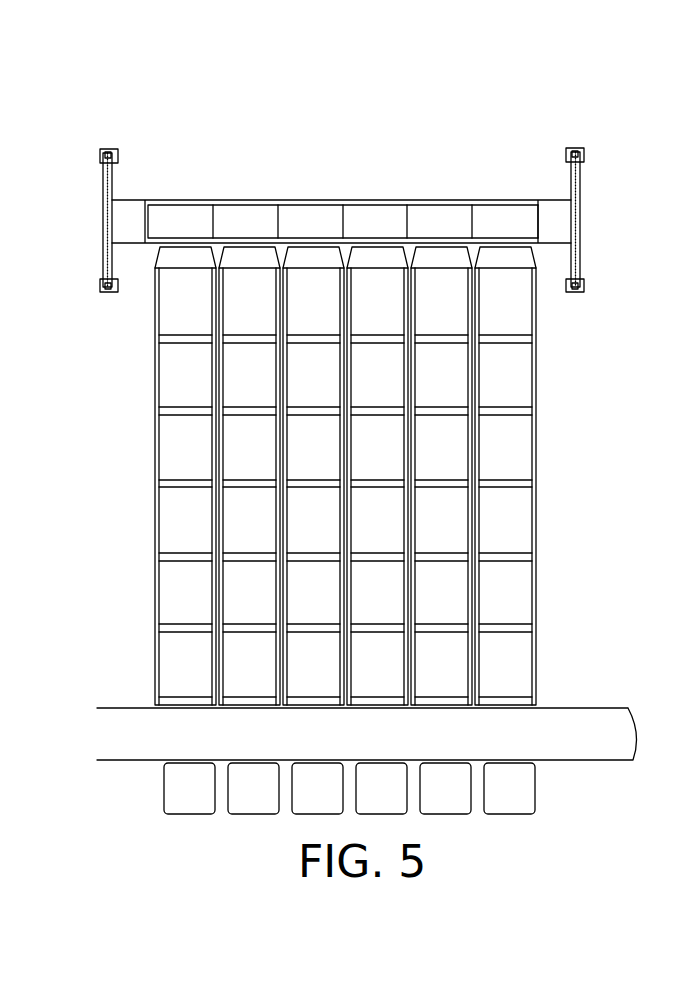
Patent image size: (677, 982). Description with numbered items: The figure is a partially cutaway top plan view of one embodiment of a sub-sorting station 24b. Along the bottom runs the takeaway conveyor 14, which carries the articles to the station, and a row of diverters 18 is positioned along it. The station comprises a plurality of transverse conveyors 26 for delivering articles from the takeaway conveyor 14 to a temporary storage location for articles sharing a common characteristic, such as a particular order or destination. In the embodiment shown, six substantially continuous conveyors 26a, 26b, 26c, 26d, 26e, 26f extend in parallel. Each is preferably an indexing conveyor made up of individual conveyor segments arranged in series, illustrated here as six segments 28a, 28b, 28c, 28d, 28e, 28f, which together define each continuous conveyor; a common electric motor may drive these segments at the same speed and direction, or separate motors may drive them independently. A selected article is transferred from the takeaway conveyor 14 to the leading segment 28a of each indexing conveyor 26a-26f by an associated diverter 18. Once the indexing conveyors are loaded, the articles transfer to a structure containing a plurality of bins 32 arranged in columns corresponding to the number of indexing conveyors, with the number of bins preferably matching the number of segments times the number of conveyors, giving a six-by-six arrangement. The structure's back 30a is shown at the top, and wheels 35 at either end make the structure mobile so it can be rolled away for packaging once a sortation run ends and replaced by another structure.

The takeaway conveyor 14 is at (577, 738).
The diverter 18 is at (164, 798).
The station 24b is at (292, 190).
The transverse conveyor 26 is at (548, 467).
The indexing conveyor 26a is at (155, 496).
The indexing conveyor 26b is at (245, 707).
The indexing conveyor 26c is at (312, 707).
The indexing conveyor 26d is at (388, 707).
The indexing conveyor 26e is at (455, 707).
The indexing conveyor 26f is at (518, 707).
The leading segment 28a is at (200, 684).
The conveyor segment 28b is at (200, 618).
The conveyor segment 28c is at (200, 545).
The conveyor segment 28d is at (200, 469).
The conveyor segment 28e is at (200, 396).
The conveyor segment 28f is at (200, 318).
The back 30a is at (428, 200).
The bin 32 is at (191, 233).
The wheel 35 is at (112, 154).